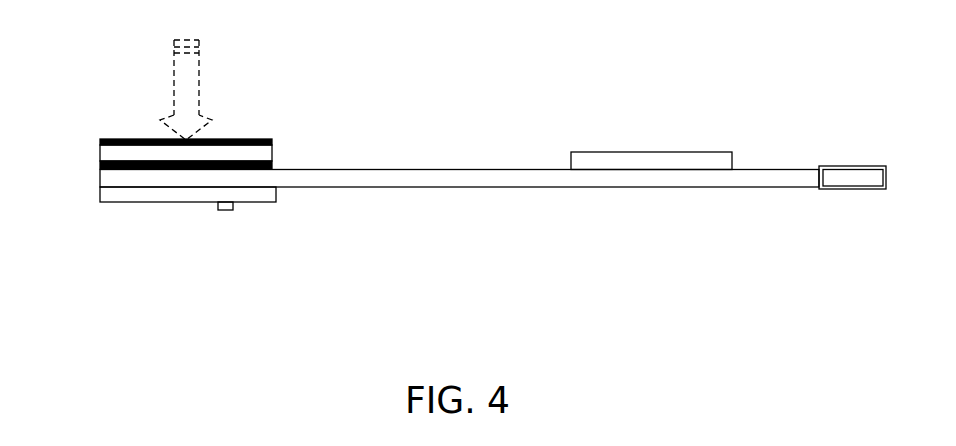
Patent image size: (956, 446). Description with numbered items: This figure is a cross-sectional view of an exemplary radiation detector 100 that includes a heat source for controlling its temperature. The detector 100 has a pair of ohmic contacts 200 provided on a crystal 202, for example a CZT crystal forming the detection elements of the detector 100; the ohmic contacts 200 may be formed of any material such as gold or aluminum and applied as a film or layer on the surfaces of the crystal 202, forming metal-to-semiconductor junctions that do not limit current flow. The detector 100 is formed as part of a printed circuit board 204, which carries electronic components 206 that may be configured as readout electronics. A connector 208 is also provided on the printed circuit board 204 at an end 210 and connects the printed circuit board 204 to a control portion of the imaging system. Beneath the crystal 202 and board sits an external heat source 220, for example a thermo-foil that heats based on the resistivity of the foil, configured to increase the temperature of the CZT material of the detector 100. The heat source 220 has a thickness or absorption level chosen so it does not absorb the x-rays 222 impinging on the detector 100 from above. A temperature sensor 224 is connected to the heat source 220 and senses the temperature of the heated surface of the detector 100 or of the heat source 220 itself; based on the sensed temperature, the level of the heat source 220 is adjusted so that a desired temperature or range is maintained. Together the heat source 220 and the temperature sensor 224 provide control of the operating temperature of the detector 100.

The detector 100 is at (453, 165).
The ohmic contacts 200 is at (100, 140).
The crystal 202 is at (100, 152).
The printed circuit board 204 is at (324, 169).
The electronic components 206 is at (626, 152).
The connector 208 is at (851, 166).
The end 210 is at (839, 212).
The heat source 220 is at (153, 203).
The x-rays 222 is at (200, 77).
The temperature sensor 224 is at (224, 210).